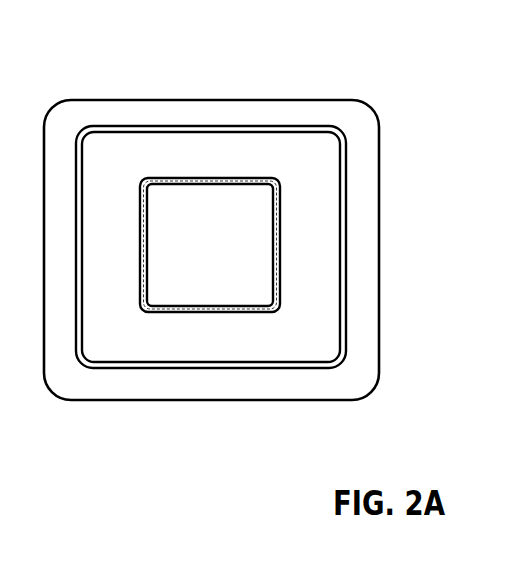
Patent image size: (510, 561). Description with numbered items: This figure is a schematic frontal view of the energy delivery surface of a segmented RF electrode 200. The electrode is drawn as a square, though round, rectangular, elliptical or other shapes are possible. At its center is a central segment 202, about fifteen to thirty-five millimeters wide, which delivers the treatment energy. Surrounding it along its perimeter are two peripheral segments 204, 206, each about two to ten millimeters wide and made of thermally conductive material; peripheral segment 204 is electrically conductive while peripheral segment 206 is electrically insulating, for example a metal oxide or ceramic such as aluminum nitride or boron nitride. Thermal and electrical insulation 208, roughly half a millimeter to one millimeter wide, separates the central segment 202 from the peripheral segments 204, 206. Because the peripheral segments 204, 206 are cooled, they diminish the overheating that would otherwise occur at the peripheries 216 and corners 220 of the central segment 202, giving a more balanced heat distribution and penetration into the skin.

The segmented RF electrode 200 is at (208, 68).
The central segment 202 is at (233, 258).
The peripheral segment 204 is at (245, 148).
The peripheral segment 206 is at (315, 117).
The thermal and electrical insulation 208 is at (143, 181).
The peripheries 216 is at (342, 214).
The corners 220 is at (272, 306).